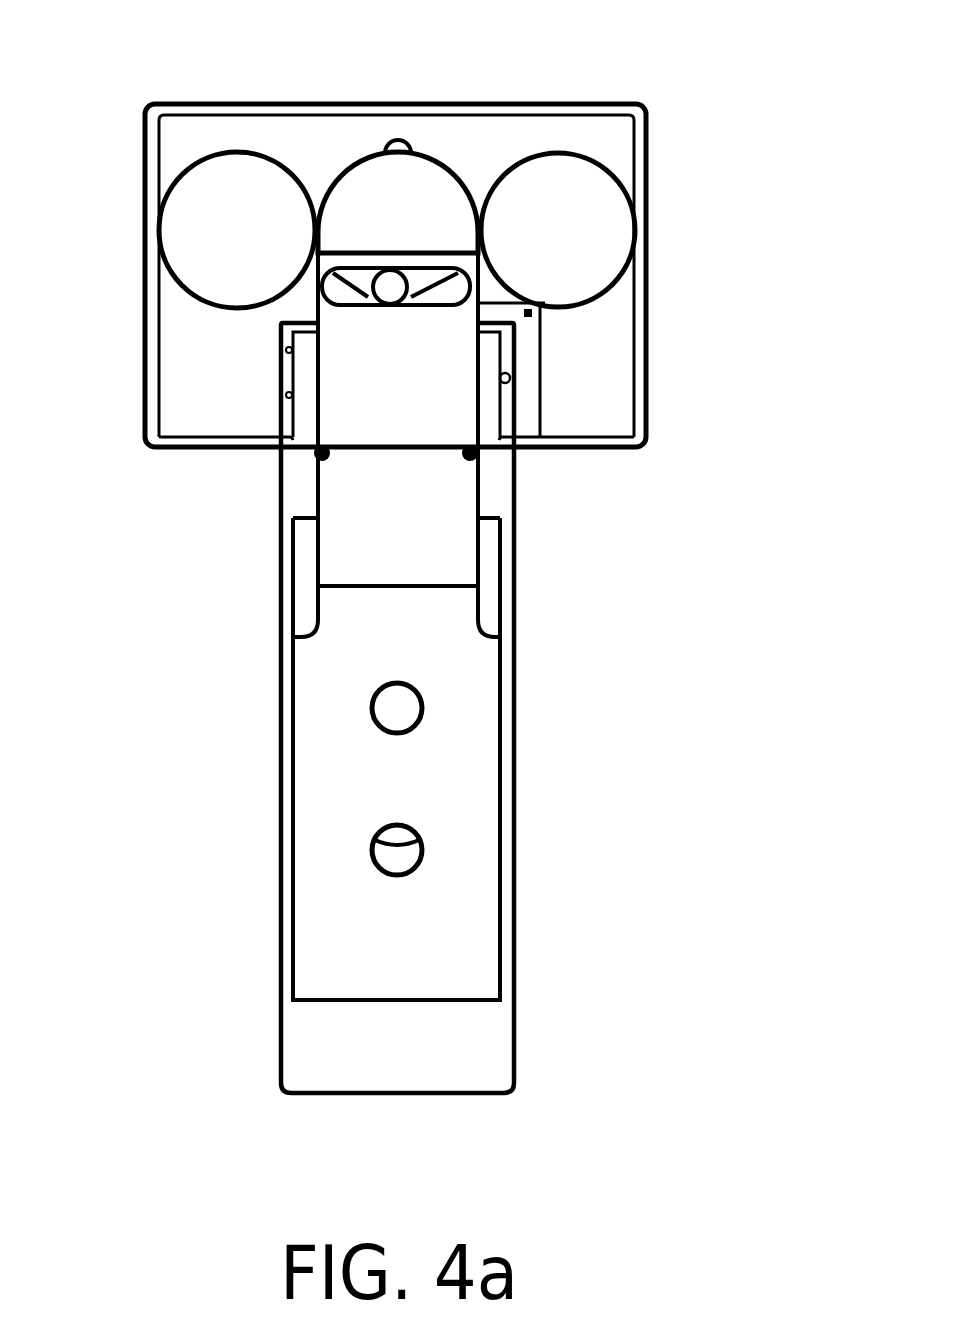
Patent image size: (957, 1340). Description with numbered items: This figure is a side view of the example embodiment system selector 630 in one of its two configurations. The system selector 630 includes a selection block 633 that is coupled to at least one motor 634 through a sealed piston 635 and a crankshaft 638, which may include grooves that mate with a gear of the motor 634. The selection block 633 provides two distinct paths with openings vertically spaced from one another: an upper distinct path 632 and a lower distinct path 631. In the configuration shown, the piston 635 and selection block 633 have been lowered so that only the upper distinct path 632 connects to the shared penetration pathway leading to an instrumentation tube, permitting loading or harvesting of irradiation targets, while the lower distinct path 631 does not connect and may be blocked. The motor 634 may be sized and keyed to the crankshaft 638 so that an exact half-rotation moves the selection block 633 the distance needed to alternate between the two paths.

The system selector 630 is at (216, 30).
The lower distinct path 631 is at (387, 857).
The upper distinct path 632 is at (410, 710).
The selection block 633 is at (438, 942).
The motor 634 is at (220, 227).
The sealed piston 635 is at (408, 524).
The crankshaft 638 is at (427, 262).